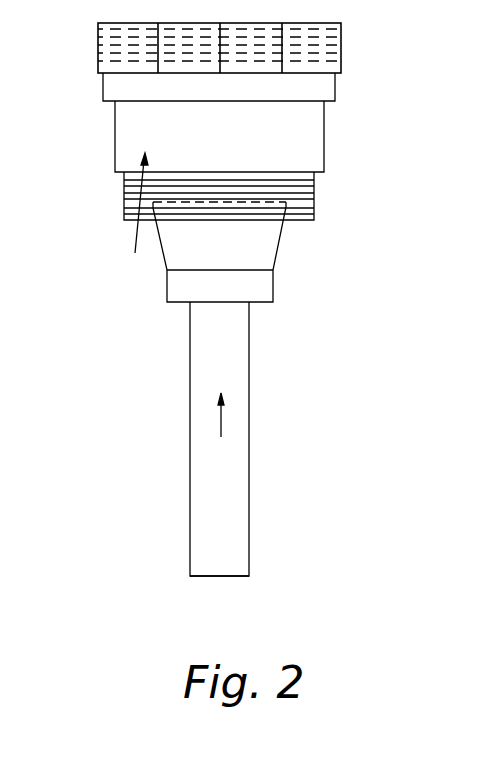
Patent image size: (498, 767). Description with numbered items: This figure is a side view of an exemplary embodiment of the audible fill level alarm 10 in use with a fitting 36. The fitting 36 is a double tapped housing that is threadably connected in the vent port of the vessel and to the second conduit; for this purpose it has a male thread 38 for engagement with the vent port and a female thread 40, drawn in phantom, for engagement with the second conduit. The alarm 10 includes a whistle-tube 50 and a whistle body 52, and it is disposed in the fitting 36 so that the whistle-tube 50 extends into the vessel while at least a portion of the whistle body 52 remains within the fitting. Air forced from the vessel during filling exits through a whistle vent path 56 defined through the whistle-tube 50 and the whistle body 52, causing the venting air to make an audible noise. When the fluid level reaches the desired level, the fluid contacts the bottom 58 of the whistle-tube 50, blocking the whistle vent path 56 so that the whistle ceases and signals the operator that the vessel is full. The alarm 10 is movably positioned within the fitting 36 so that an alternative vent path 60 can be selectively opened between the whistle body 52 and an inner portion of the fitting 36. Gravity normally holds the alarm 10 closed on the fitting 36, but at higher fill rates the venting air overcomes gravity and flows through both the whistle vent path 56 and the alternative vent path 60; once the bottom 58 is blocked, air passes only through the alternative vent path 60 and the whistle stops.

The audible fill level alarm 10 is at (260, 337).
The fitting 36 is at (115, 122).
The male thread 38 is at (295, 188).
The female thread 40 is at (310, 50).
The whistle-tube 50 is at (250, 424).
The whistle body 52 is at (277, 252).
The whistle vent path 56 is at (218, 424).
The bottom 58 is at (245, 577).
The alternative vent path 60 is at (135, 250).